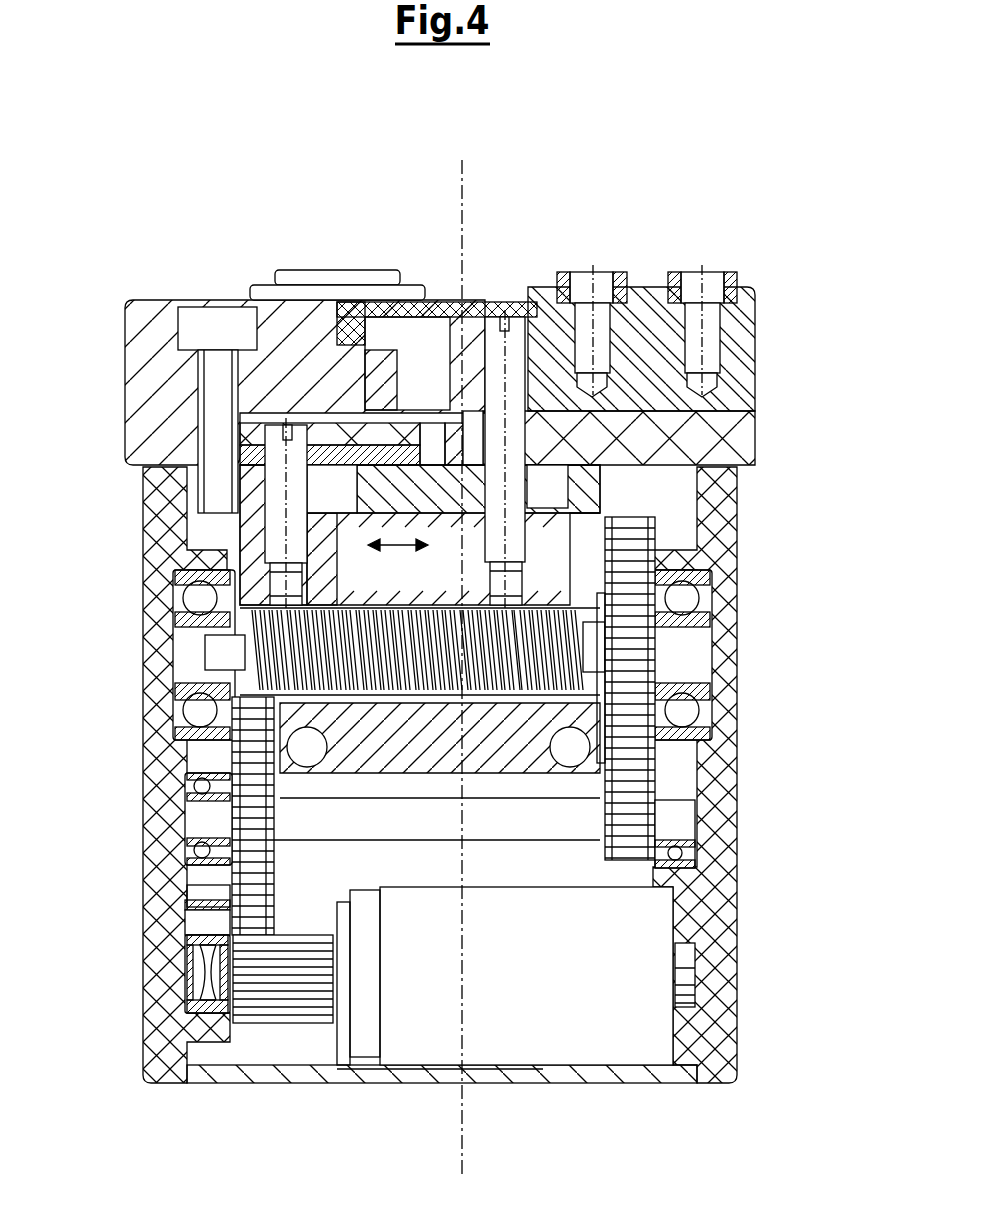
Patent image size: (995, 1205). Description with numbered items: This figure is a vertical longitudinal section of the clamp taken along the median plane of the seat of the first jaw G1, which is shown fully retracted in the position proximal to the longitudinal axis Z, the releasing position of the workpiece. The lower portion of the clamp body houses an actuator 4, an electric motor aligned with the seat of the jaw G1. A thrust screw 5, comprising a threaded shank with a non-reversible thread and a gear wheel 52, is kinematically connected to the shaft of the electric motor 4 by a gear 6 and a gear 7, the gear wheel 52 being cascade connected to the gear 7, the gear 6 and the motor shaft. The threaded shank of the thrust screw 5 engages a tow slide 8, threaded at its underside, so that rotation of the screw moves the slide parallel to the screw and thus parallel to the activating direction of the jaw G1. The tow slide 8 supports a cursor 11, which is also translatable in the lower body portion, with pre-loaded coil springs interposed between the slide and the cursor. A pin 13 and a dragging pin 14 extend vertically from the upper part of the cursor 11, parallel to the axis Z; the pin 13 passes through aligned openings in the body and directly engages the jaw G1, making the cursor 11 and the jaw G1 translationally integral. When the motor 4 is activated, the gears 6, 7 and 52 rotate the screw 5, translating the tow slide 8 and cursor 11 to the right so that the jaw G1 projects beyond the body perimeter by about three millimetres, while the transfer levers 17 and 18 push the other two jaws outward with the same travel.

The first jaw G1 is at (740, 352).
The transfer lever 17 is at (328, 433).
The transfer lever 18 is at (328, 455).
The dragging pin 14 is at (277, 453).
The pin 13 is at (518, 350).
The cursor 11 is at (398, 564).
The thrust screw 5 is at (295, 662).
The gear wheel 52 is at (627, 605).
The tow slide 8 is at (436, 771).
The gear 7 is at (305, 823).
The gear 6 is at (262, 1000).
The actuator 4 is at (647, 972).
The longitudinal axis Z is at (463, 182).